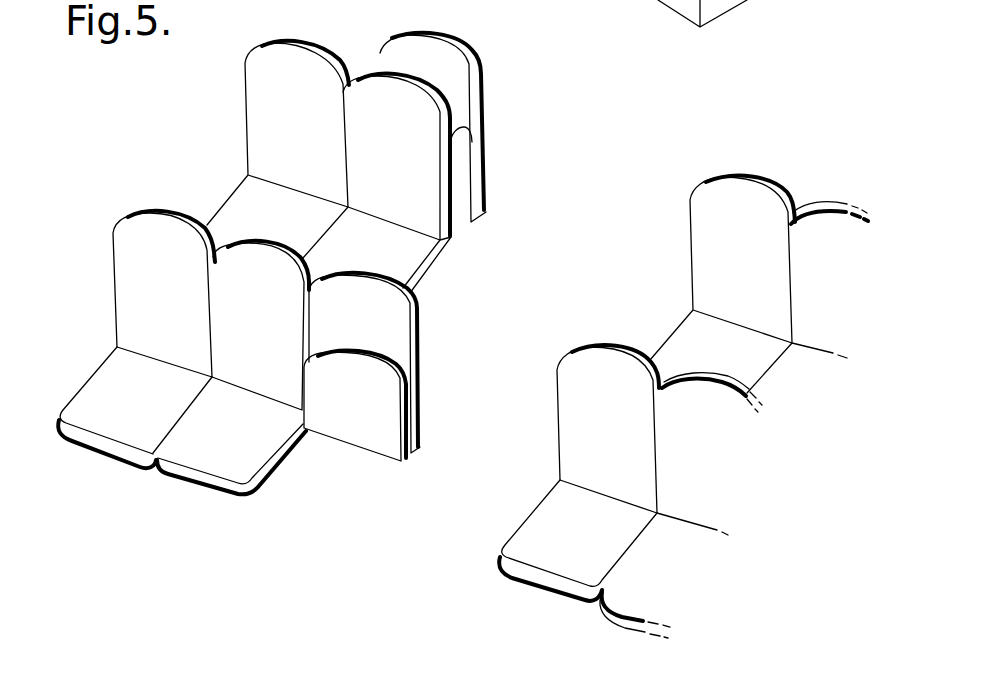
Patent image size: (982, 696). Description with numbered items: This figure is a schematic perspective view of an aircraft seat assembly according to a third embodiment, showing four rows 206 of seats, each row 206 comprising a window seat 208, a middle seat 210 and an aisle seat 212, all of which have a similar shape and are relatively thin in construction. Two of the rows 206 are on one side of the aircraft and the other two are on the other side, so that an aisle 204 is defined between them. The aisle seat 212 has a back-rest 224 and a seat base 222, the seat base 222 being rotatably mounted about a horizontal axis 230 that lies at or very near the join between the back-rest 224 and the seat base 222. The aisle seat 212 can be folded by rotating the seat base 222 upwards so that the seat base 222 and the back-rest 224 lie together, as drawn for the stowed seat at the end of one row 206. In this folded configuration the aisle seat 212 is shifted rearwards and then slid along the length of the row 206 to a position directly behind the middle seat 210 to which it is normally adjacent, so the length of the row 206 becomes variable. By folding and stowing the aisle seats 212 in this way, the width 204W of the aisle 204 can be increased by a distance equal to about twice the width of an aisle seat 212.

The aisle 204 is at (402, 505).
The aisle width 204W is at (690, 233).
The row 206 is at (198, 100).
The window seat 208 is at (322, 137).
The middle seat 210 is at (420, 169).
The aisle seat 212 is at (586, 318).
The seat base 222 is at (387, 410).
The back-rest 224 is at (397, 326).
The horizontal axis 230 is at (560, 480).